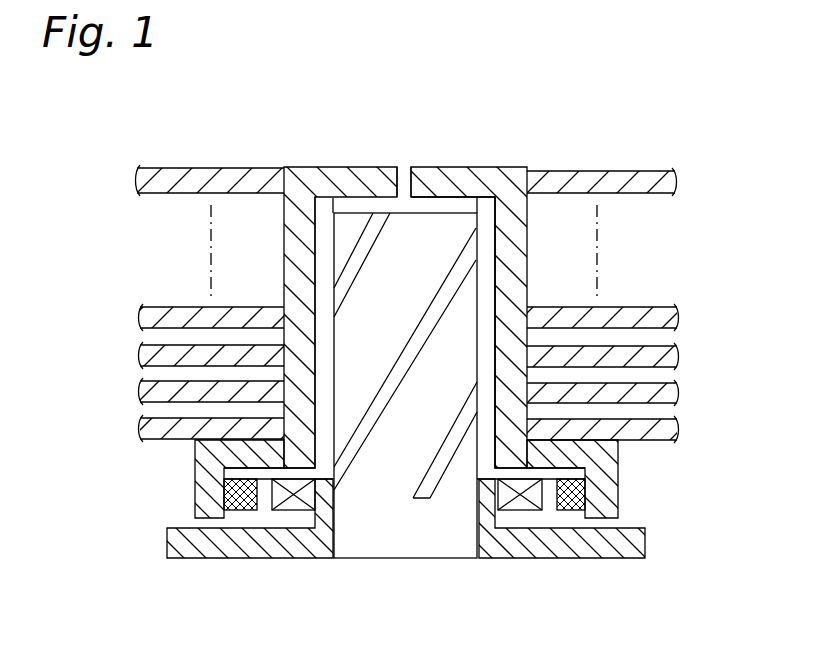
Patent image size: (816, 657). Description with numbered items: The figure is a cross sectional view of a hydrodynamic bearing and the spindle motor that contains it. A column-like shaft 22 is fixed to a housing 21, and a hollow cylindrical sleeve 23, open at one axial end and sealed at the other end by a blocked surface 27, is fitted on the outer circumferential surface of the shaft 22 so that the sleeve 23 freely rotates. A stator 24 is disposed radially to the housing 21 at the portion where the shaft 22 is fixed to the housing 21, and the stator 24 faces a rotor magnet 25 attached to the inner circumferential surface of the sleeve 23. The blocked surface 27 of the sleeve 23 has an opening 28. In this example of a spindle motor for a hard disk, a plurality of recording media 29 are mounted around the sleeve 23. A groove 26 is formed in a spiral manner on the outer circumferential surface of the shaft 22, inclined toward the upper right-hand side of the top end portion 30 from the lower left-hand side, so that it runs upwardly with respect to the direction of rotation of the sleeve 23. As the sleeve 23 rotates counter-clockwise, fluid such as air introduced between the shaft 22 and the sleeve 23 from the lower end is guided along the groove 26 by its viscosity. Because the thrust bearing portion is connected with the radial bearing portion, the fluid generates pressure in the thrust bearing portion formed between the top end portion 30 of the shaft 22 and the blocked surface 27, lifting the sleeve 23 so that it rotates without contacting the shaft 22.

The housing 21 is at (250, 543).
The shaft 22 is at (408, 533).
The sleeve 23 is at (343, 182).
The stator 24 is at (517, 505).
The rotor magnet 25 is at (575, 505).
The groove 26 is at (392, 400).
The blocked surface 27 is at (448, 197).
The opening 28 is at (403, 165).
The recording media 29 is at (652, 313).
The top end portion 30 is at (343, 207).